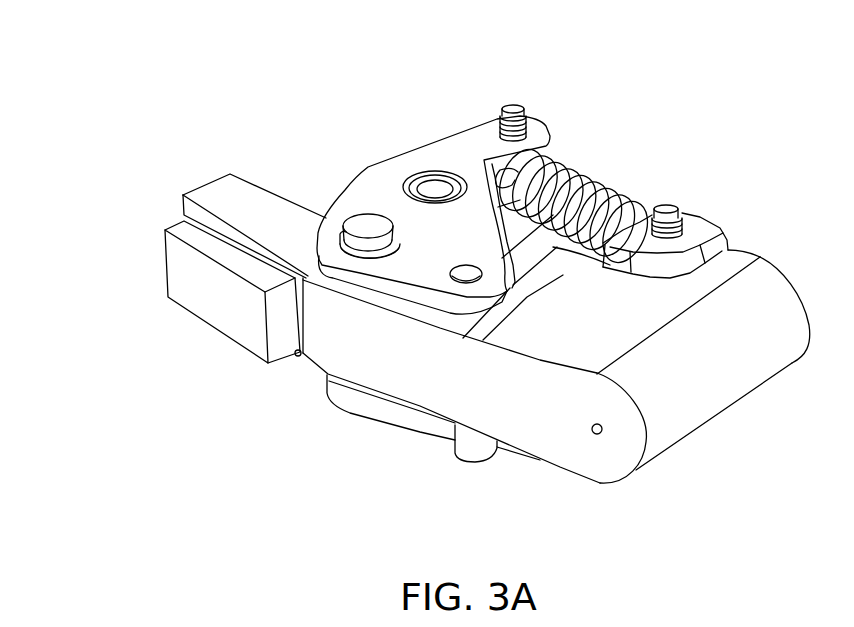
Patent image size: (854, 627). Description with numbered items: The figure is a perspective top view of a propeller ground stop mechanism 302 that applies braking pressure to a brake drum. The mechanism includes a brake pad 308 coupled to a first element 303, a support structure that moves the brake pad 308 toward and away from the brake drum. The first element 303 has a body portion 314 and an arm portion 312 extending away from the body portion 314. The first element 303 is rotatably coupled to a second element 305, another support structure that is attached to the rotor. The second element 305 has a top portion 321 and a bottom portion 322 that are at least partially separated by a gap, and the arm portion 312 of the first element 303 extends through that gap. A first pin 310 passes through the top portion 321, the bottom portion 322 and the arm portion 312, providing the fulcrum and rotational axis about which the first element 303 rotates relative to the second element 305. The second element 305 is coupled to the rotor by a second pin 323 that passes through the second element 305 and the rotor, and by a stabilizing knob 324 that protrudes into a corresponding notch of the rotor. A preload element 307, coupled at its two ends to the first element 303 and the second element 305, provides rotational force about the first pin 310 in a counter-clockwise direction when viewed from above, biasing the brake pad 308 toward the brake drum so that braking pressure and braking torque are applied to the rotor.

The propeller ground stop mechanism 302 is at (136, 30).
The first element 303 is at (740, 248).
The second element 305 is at (470, 140).
The preload element 307 is at (588, 175).
The brake pad 308 is at (203, 298).
The first pin 310 is at (367, 222).
The arm portion 312 is at (206, 190).
The body portion 314 is at (682, 390).
The top portion 321 is at (372, 185).
The bottom portion 322 is at (350, 413).
The second pin 323 is at (434, 186).
The stabilizing knob 324 is at (477, 455).